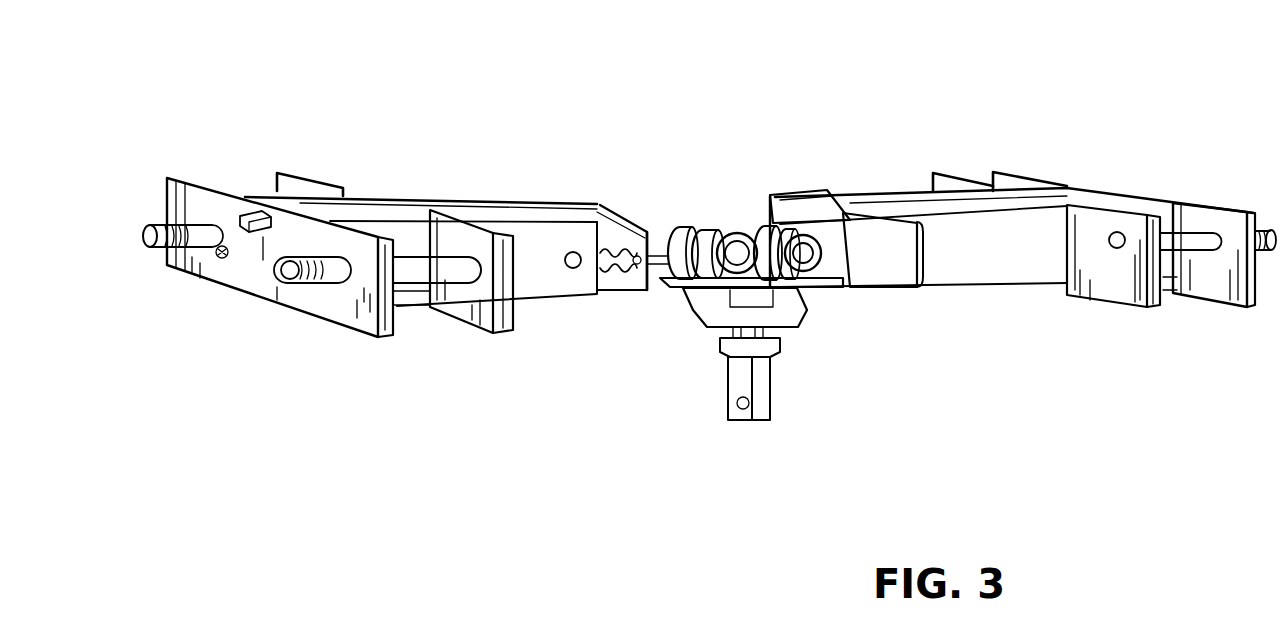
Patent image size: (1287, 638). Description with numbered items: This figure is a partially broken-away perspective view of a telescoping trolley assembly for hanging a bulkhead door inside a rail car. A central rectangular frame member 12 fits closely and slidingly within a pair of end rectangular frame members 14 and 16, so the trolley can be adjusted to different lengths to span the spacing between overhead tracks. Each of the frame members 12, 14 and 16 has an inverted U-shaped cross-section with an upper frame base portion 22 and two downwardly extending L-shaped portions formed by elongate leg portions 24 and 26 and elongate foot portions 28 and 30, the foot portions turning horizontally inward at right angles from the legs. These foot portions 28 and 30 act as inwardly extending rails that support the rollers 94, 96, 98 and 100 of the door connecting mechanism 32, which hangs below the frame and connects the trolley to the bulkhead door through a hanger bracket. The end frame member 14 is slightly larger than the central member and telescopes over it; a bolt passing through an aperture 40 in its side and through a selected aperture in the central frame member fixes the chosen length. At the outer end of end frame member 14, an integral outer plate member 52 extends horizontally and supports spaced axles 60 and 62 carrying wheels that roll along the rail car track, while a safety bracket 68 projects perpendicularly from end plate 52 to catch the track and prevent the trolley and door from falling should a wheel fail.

The central rectangular frame member 12 is at (606, 206).
The end rectangular frame member 14 is at (450, 192).
The end rectangular frame member 16 is at (911, 192).
The upper frame base portion 22 is at (527, 212).
The leg portion 24 is at (768, 200).
The leg portion 26 is at (527, 282).
The foot portion 28 is at (652, 250).
The foot portion 30 is at (692, 289).
The door connecting mechanism 32 is at (697, 333).
The aperture 40 is at (637, 262).
The outer plate member 52 is at (350, 306).
The axle 60 is at (193, 230).
The axle 62 is at (338, 277).
The safety bracket 68 is at (250, 220).
The roller 94 is at (685, 232).
The roller 96 is at (708, 228).
The roller 98 is at (742, 228).
The roller 100 is at (780, 280).